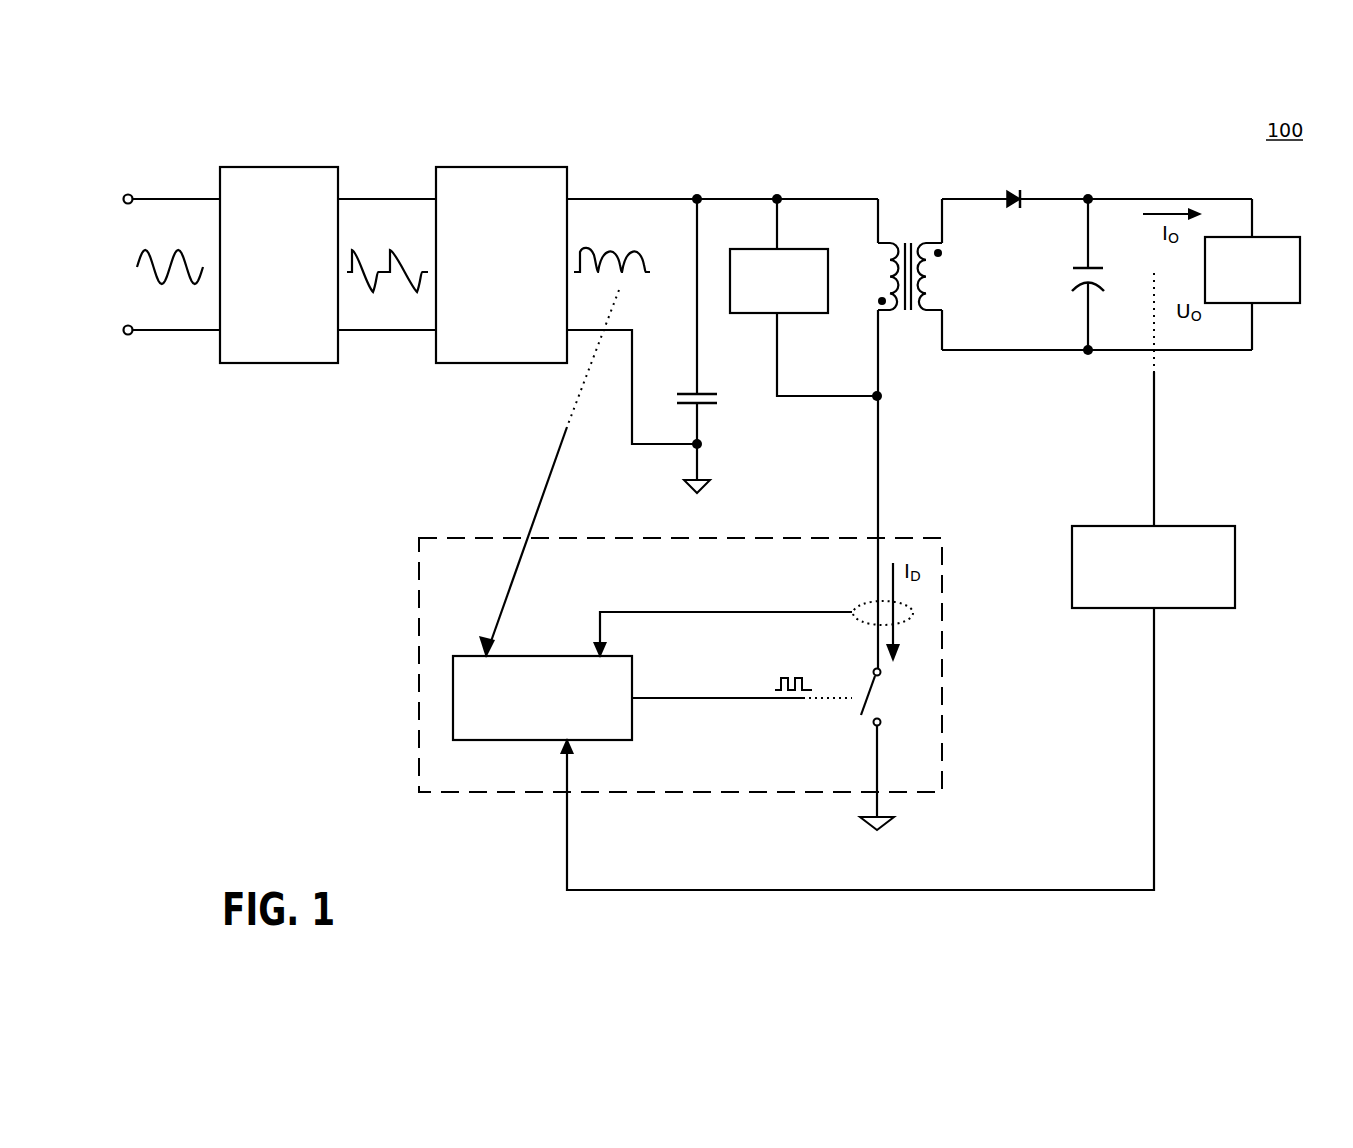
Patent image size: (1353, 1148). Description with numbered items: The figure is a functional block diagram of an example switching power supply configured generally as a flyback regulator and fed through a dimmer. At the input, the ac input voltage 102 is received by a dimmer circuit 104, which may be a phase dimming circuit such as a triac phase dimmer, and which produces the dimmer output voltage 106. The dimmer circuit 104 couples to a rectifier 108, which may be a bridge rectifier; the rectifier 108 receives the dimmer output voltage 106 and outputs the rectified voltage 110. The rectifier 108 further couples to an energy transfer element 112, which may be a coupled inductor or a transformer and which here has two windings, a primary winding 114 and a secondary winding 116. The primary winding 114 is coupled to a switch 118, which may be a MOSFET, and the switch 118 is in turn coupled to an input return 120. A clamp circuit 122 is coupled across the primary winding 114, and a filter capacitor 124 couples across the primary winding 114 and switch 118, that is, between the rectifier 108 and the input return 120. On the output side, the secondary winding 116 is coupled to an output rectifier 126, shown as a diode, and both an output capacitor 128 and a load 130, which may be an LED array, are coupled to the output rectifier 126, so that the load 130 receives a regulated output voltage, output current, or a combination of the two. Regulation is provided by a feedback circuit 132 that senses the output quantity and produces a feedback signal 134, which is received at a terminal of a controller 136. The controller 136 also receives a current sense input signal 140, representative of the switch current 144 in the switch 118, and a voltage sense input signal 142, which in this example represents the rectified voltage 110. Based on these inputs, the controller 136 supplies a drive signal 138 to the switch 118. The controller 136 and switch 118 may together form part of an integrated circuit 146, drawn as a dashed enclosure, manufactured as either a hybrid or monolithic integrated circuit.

The ac input voltage 102 is at (104, 243).
The dimmer circuit 104 is at (268, 160).
The dimmer output voltage 106 is at (392, 207).
The rectifier 108 is at (493, 158).
The rectified voltage 110 is at (620, 210).
The energy transfer element 112 is at (912, 323).
The primary winding 114 is at (888, 275).
The secondary winding 116 is at (938, 280).
The switch 118 is at (932, 695).
The input return 120 is at (712, 468).
The clamp circuit 122 is at (793, 322).
The filter capacitor 124 is at (723, 378).
The rectifier D1 126 is at (1008, 182).
The output capacitor 128 is at (1060, 292).
The load 130 is at (1267, 229).
The feedback circuit 132 is at (1245, 565).
The feedback signal 134 is at (1208, 706).
The controller 136 is at (445, 702).
The drive signal 138 is at (788, 758).
The current sense input signal 140 is at (770, 547).
The voltage sense input signal 142 is at (448, 469).
The switch current 144 is at (918, 553).
The integrated circuit 146 is at (412, 597).